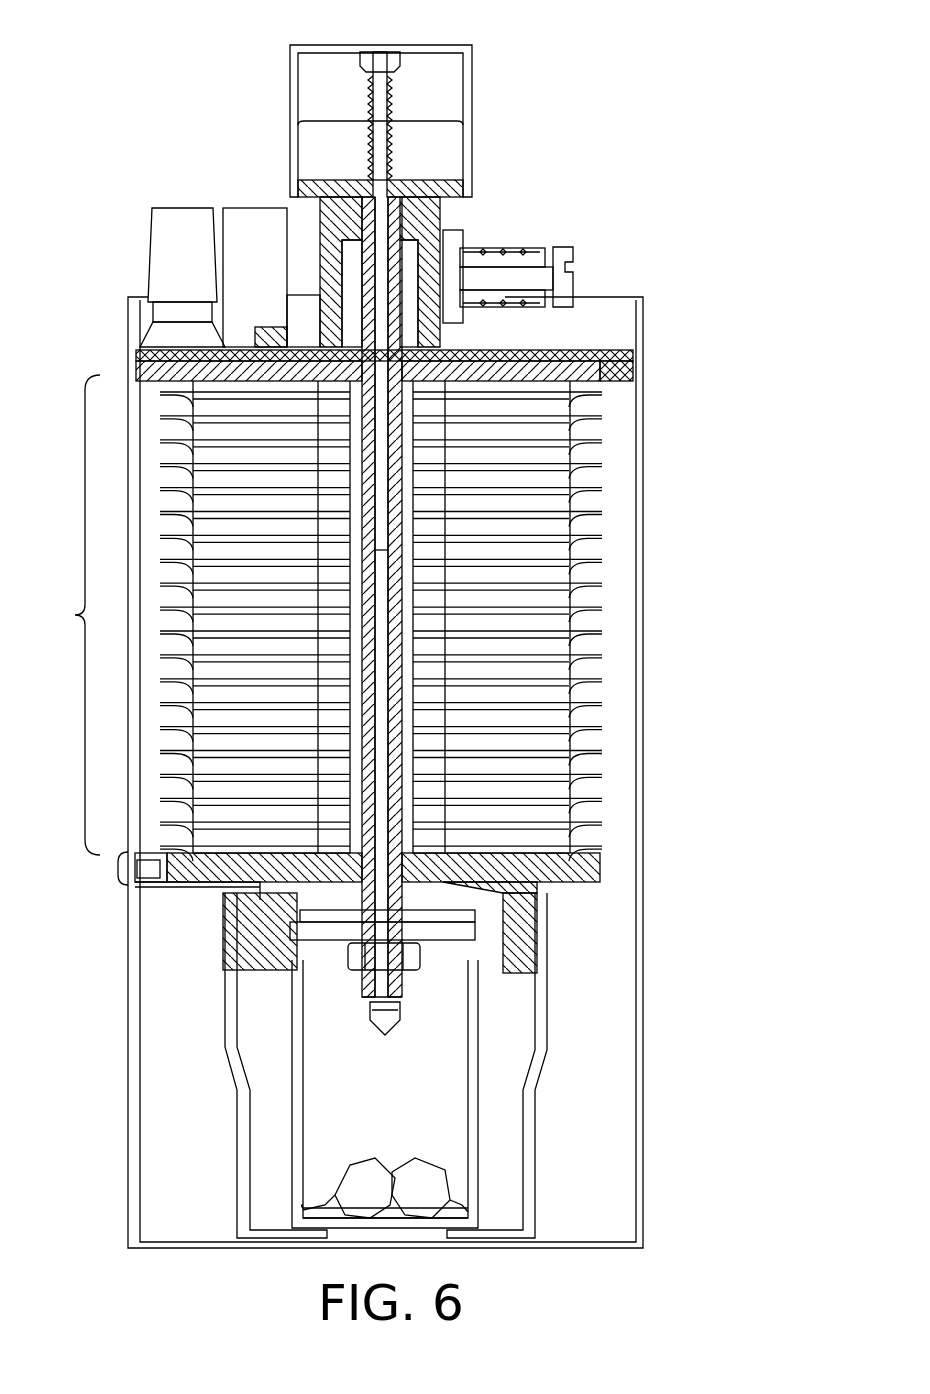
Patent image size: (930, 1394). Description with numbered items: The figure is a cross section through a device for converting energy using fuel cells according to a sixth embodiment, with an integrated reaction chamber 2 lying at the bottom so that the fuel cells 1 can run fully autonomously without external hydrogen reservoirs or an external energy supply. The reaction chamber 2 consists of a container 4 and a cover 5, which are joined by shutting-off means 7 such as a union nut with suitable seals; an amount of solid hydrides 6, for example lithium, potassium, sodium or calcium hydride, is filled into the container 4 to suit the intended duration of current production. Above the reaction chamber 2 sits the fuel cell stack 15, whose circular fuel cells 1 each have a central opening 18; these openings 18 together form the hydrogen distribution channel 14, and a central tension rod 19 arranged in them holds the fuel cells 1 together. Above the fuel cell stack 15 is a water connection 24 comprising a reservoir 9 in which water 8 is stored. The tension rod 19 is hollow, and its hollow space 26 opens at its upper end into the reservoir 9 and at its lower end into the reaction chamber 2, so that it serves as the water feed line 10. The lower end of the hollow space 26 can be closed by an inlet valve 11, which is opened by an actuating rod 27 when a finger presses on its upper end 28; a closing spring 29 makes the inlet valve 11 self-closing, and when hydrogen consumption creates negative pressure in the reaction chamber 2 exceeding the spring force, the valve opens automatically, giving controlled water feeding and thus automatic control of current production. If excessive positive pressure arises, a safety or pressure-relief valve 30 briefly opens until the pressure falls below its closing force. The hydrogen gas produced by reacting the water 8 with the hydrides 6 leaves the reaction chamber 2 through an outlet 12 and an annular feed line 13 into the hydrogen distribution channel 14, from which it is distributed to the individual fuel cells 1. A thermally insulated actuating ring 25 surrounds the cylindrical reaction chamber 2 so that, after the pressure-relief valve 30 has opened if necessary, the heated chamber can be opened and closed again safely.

The fuel cells 1 is at (603, 417).
The reaction chamber 2 is at (445, 1130).
The container 4 is at (478, 1090).
The cover 5 is at (262, 905).
The hydrides 6 is at (357, 1172).
The shutting-off means 7 is at (507, 973).
The water 8 is at (430, 165).
The reservoir 9 is at (472, 82).
The feed line 10 is at (378, 228).
The inlet valve 11 is at (400, 1010).
The outlet 12 is at (265, 940).
The annular feed line 13 is at (262, 884).
The hydrogen distribution channel 14 is at (412, 598).
The fuel cell stack 15 is at (69, 615).
The opening 18 is at (410, 848).
The tension rod 19 is at (387, 708).
The water connection 24 is at (365, 180).
The actuating ring 25 is at (530, 1083).
The hollow space 26 is at (420, 356).
The actuating rod 27 is at (383, 555).
The upper end 28 is at (400, 62).
The closing spring 29 is at (362, 150).
The safety or pressure-relief valve 30 is at (540, 275).